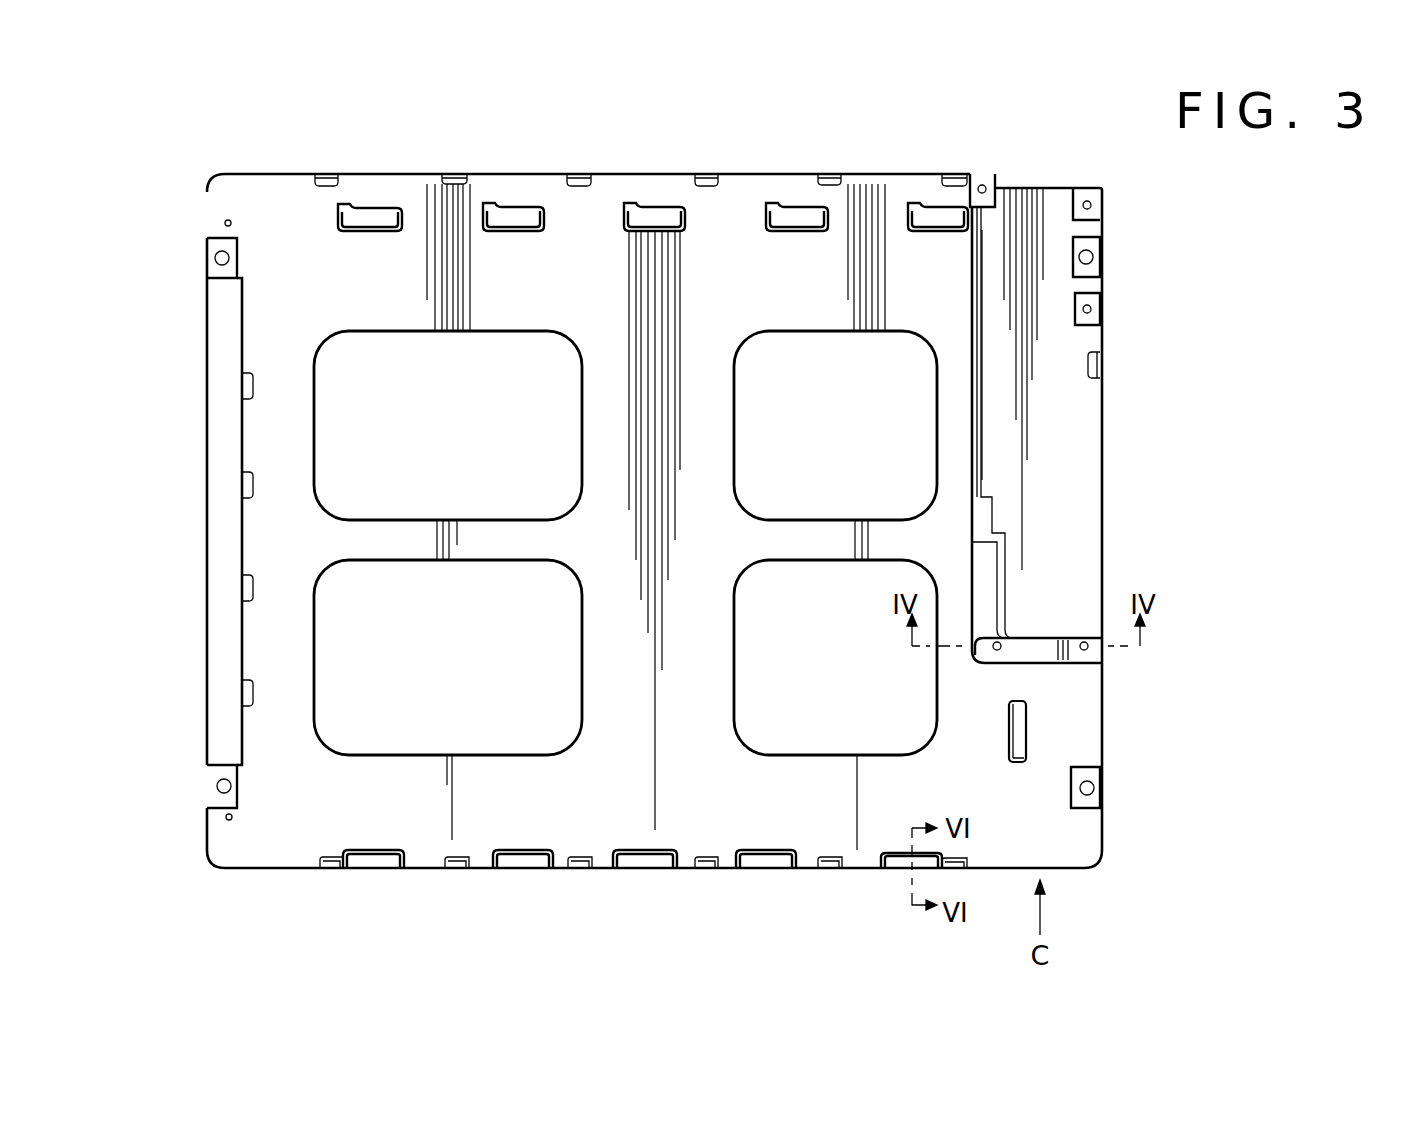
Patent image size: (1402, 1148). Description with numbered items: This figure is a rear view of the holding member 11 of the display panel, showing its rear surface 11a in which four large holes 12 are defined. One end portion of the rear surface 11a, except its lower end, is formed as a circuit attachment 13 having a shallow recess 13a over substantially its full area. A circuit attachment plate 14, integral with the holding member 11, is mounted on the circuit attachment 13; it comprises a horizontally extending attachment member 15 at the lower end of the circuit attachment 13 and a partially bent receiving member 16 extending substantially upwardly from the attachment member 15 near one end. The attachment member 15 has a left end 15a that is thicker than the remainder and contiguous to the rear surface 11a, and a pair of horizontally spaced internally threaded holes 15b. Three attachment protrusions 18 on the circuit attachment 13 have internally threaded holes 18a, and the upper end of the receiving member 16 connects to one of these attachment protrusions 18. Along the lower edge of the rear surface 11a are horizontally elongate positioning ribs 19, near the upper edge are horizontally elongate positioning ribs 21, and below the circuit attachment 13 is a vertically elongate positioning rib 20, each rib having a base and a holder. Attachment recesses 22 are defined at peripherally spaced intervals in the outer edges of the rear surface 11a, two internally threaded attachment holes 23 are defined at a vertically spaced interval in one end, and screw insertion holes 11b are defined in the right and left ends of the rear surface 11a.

The holding member 11 is at (182, 165).
The rear surface 11a is at (290, 215).
The screw insertion holes 11b is at (222, 264).
The large holes 12 is at (374, 336).
The circuit attachment 13 is at (1030, 238).
The shallow recess 13a is at (1075, 496).
The circuit attachment plate 14 is at (1055, 655).
The attachment member 15 is at (1047, 640).
The left end 15a is at (1098, 662).
The internally threaded holes 15b is at (1002, 645).
The receiving member 16 is at (982, 403).
The attachment protrusions 18 is at (984, 183).
The internally threaded holes 18a is at (990, 190).
The positioning ribs 19 is at (373, 868).
The positioning rib 20 is at (1021, 748).
The positioning ribs 21 is at (370, 214).
The attachment recesses 22 is at (325, 174).
The attachment holes 23 is at (228, 219).